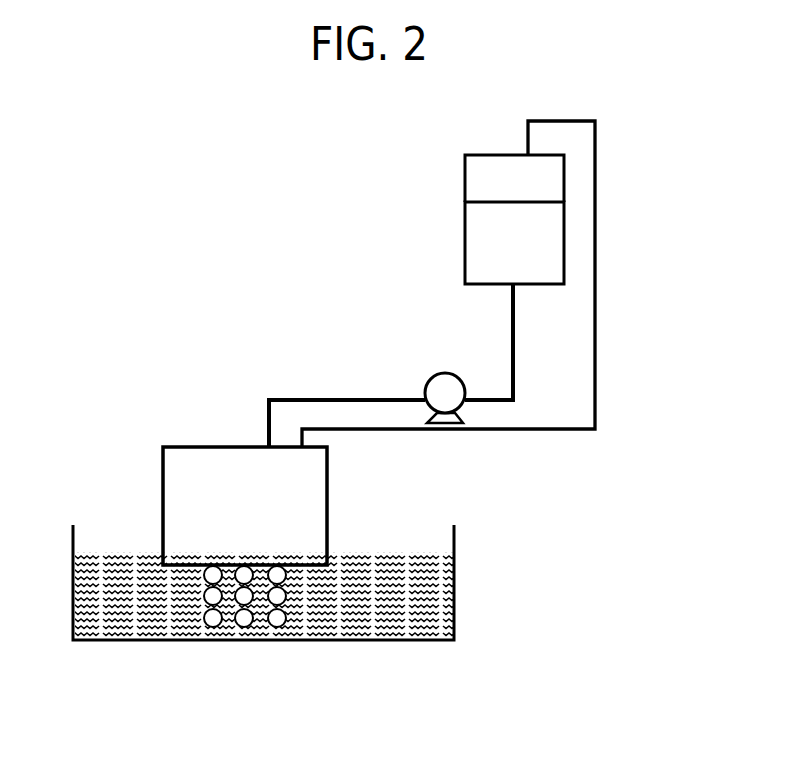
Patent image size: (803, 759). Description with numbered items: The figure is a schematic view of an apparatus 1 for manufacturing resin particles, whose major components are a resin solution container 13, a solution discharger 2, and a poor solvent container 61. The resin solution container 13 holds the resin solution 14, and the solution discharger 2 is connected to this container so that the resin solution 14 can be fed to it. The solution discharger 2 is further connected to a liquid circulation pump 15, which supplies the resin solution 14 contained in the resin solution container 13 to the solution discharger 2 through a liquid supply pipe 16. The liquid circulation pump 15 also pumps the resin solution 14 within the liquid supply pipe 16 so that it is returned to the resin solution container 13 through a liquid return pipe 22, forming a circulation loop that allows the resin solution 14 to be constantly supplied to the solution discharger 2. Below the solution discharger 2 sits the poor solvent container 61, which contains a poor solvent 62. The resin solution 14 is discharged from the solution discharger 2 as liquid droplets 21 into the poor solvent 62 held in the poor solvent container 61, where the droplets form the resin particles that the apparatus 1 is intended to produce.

The apparatus for manufacturing resin particles 1 is at (140, 250).
The solution discharger 2 is at (329, 463).
The resin solution container 13 is at (464, 186).
The resin solution 14 is at (485, 246).
The liquid circulation pump 15 is at (429, 387).
The liquid supply pipe 16 is at (511, 340).
The liquid droplets 21 is at (247, 620).
The liquid return pipe 22 is at (597, 235).
The poor solvent container 61 is at (456, 570).
The poor solvent 62 is at (417, 622).